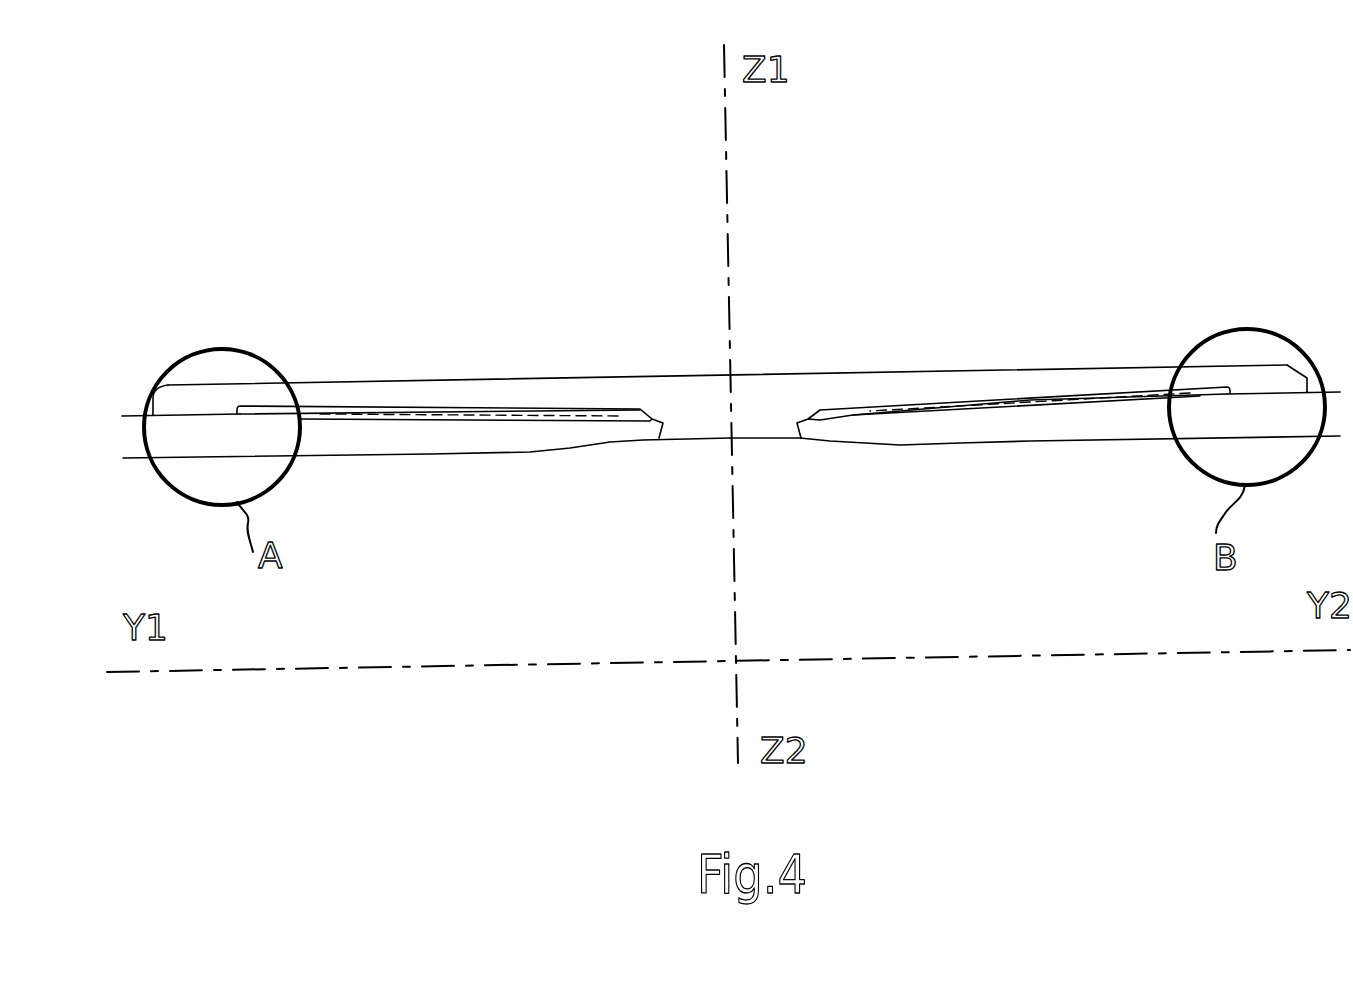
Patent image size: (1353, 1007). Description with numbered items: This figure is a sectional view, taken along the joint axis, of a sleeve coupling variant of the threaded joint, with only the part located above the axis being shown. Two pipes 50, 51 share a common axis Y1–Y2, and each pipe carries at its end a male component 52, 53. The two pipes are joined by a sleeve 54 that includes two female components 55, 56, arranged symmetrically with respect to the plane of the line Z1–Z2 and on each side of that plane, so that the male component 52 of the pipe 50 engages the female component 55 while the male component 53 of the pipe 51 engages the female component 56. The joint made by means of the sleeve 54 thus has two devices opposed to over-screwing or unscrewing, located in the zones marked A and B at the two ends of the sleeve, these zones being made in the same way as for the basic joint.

The pipe 50 is at (133, 428).
The pipe 51 is at (1333, 400).
The male component 52 is at (318, 430).
The male component 53 is at (970, 423).
The sleeve 54 is at (768, 345).
The female component 55 is at (462, 398).
The female component 56 is at (1063, 386).